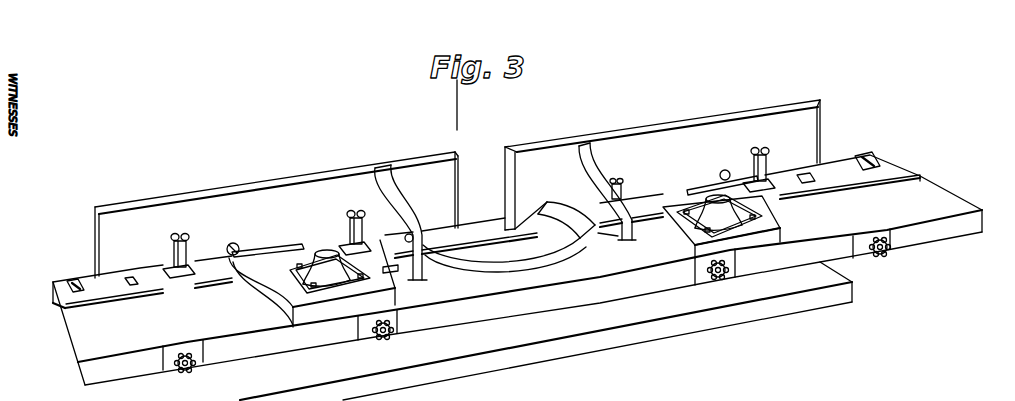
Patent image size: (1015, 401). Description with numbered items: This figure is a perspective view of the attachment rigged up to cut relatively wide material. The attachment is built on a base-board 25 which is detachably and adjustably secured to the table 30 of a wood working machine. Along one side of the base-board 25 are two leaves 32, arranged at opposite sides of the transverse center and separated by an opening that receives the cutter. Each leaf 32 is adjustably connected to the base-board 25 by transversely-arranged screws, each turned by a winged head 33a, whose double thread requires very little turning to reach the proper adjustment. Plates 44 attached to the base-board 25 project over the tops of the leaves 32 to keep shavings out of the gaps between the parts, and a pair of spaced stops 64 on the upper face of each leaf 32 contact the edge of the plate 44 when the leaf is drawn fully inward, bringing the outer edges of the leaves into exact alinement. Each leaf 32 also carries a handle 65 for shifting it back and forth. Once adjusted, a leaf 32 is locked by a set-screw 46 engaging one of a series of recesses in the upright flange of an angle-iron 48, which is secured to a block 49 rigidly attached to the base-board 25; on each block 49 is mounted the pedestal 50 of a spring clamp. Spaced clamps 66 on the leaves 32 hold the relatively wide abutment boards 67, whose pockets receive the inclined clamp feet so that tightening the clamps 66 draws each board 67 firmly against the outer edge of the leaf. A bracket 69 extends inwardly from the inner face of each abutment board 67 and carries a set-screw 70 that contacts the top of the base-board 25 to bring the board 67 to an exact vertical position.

The base-board 25 is at (90, 345).
The table 30 is at (540, 350).
The leaves 32 is at (53, 298).
The winged head 33a is at (185, 372).
The plates 44 is at (173, 290).
The set-screw 46 is at (237, 246).
The angle-iron 48 is at (268, 252).
The block 49 is at (285, 308).
The pedestal 50 is at (292, 272).
The stops 64 is at (150, 255).
The handle 65 is at (75, 280).
The clamps 66 is at (183, 265).
The abutment boards 67 is at (290, 188).
The bracket 69 is at (395, 200).
The set-screw 70 is at (428, 243).